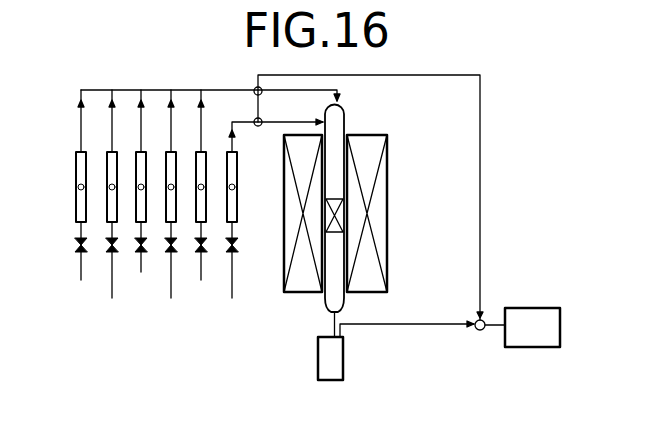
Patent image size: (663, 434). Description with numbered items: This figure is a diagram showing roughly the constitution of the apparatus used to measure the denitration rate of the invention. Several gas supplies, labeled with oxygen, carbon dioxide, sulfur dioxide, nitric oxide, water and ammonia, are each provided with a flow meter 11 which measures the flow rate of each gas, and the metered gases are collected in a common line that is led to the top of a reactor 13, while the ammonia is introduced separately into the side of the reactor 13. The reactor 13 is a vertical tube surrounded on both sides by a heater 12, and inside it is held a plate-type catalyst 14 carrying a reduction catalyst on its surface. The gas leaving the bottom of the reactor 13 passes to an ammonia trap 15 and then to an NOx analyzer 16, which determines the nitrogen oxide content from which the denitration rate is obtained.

The flow meter 11 is at (76, 197).
The heater 12 is at (284, 174).
The reactor 13 is at (344, 112).
The plate-type catalyst 14 is at (332, 233).
The ammonia trap 15 is at (343, 352).
The NOx analyzer 16 is at (530, 308).